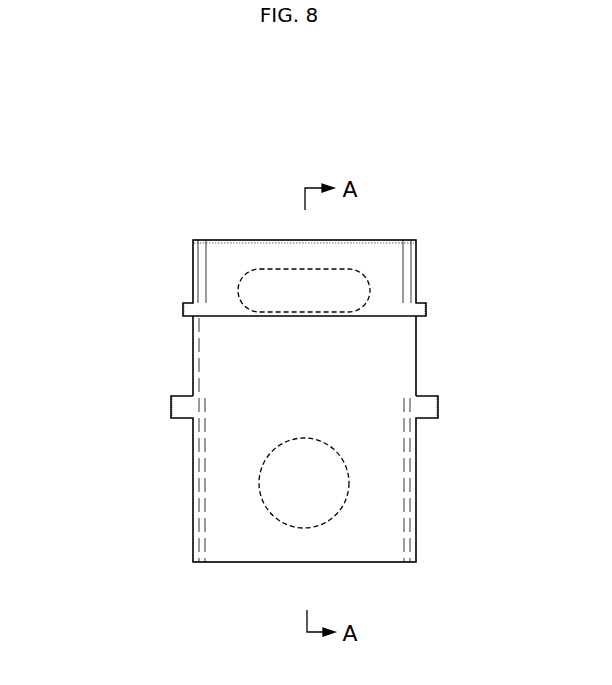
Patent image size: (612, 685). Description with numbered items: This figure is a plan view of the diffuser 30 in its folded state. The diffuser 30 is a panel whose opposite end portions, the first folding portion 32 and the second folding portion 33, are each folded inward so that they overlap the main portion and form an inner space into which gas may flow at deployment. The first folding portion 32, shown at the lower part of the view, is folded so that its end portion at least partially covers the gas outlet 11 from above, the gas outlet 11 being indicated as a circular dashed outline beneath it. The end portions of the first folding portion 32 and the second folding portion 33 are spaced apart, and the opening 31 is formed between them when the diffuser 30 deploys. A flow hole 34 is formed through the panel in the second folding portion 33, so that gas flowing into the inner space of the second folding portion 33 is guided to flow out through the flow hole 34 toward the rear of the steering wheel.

The diffuser 30 is at (420, 211).
The second folding portion 33 is at (417, 273).
The flow hole 34 is at (288, 291).
The opening 31 is at (386, 355).
The first folding portion 32 is at (417, 488).
The gas outlet 11 is at (303, 482).